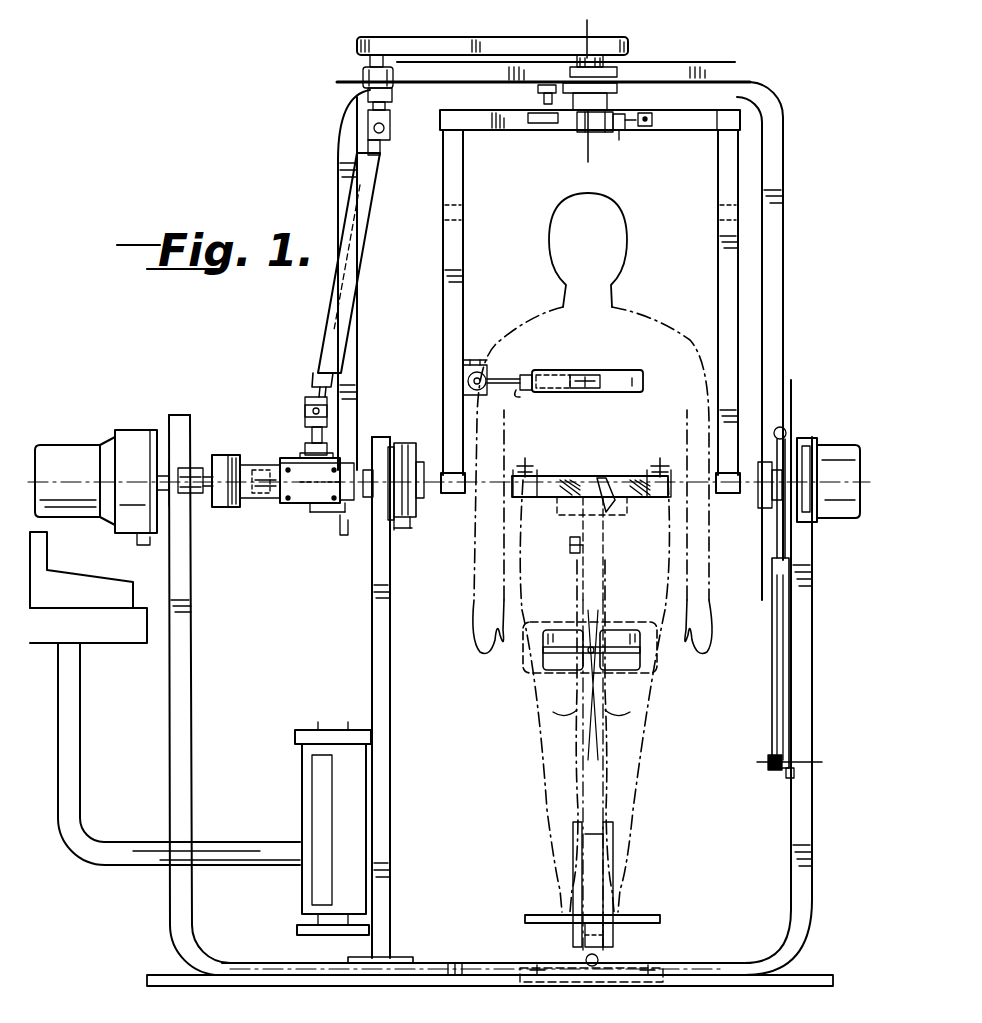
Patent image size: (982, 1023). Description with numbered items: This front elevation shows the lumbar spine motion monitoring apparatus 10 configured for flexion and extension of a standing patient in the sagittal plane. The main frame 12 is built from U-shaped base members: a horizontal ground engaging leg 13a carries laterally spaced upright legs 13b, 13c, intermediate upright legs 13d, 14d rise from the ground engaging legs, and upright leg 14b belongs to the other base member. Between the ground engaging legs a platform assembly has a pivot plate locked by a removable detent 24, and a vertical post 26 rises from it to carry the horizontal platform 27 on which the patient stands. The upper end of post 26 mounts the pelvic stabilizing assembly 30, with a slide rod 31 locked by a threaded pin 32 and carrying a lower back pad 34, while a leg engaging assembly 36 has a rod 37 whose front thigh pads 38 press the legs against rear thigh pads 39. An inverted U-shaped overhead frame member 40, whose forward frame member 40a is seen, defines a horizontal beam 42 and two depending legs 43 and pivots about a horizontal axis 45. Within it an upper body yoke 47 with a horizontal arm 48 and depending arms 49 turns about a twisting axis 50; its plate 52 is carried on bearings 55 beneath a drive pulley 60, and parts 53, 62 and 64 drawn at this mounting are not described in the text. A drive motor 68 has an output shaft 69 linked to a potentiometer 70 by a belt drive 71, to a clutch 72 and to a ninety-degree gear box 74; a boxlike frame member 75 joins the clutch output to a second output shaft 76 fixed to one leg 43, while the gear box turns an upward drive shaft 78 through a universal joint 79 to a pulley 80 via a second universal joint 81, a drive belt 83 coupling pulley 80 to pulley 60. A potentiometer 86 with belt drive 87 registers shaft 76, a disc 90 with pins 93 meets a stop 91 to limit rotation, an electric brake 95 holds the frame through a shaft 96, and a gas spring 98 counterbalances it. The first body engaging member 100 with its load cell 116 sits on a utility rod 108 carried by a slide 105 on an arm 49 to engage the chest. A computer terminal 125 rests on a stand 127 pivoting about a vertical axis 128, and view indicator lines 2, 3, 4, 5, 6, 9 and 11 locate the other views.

The section line 2- 2 is at (208, 400).
The section line 3- 3 is at (73, 290).
The section line 4- 4 is at (205, 180).
The section line 5- 5 is at (412, 110).
The section line 6- 6 is at (565, 1018).
The section line 9- 9 is at (487, 318).
The apparatus 10 is at (235, 329).
The section line 11- 11 is at (432, 122).
The main frame 12 is at (160, 912).
The horizontal ground engaging leg 13a is at (718, 987).
The upright leg 13b is at (169, 726).
The upright leg 13c is at (814, 818).
The intermediate upright leg 13d is at (372, 656).
The upright leg 14b is at (275, 1009).
The intermediate upright leg 14d is at (562, 1022).
The removable detent 24 is at (606, 960).
The vertical post 26 is at (608, 790).
The horizontal platform 27 is at (650, 912).
The pelvic stabilizing assembly 30 is at (605, 470).
The slide rod 31 is at (583, 527).
The threaded pin 32 is at (570, 553).
The lower back pad 34 is at (605, 517).
The leg engaging assembly 36 is at (560, 676).
The rod 37 is at (575, 660).
The padded front thigh pads 38 is at (590, 660).
The rear thigh pads 39 is at (523, 655).
The overhead frame member 40 is at (323, 186).
The forward frame member 40a is at (340, 216).
The horizontal beam 42 is at (658, 66).
The depending legs 43 is at (352, 368).
The horizontal axis 45 is at (500, 478).
The upper body yoke 47 is at (748, 235).
The horizontal arm 48 is at (730, 135).
The depending arms 49 is at (443, 255).
The twisting axis 50 is at (585, 150).
The plate 52 is at (576, 130).
The latch 53 is at (623, 133).
The bearings 55 is at (600, 100).
The drive pulley 60 is at (611, 37).
The bracket 62 is at (538, 90).
The guide 64 is at (528, 122).
The drive motor 68 is at (80, 457).
The output shaft 69 is at (197, 466).
The potentiometer 70 is at (143, 540).
The belt drive 71 is at (173, 510).
The clutch 72 is at (225, 455).
The 90° gear box 74 is at (300, 457).
The boxlike frame member 75 is at (263, 500).
The second output shaft 76 is at (322, 505).
The drive shaft 78 is at (370, 190).
The universal joint 79 is at (307, 398).
The pulley 80 is at (363, 58).
The second universal joint 81 is at (368, 125).
The drive belt 83 is at (521, 40).
The potentiometer 86 is at (340, 532).
The belt drive 87 is at (398, 526).
The disc 90 is at (410, 502).
The stop 91 is at (393, 447).
The pins 93 is at (415, 482).
The electric brake 95 is at (840, 446).
The shaft 96 is at (760, 500).
The gas spring 98 is at (786, 627).
The first body engaging member 100 is at (595, 360).
The slide 105 is at (490, 362).
The utility rod 108 is at (472, 391).
The load cell 116 is at (578, 394).
The computer terminal 125 is at (75, 582).
The stand 127 is at (98, 636).
The vertical axis 128 is at (302, 770).